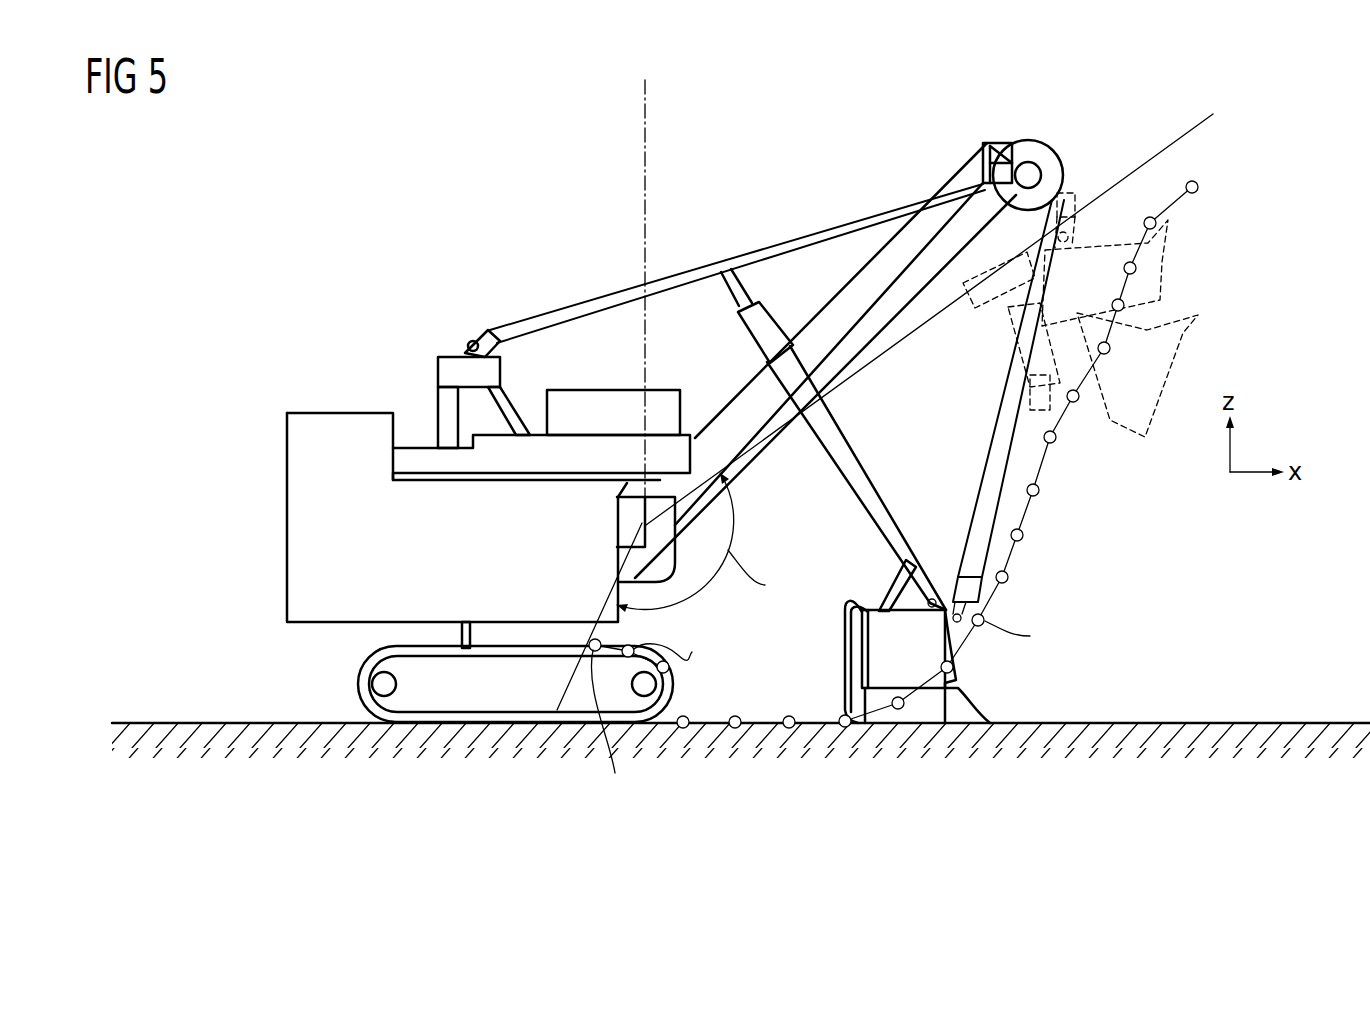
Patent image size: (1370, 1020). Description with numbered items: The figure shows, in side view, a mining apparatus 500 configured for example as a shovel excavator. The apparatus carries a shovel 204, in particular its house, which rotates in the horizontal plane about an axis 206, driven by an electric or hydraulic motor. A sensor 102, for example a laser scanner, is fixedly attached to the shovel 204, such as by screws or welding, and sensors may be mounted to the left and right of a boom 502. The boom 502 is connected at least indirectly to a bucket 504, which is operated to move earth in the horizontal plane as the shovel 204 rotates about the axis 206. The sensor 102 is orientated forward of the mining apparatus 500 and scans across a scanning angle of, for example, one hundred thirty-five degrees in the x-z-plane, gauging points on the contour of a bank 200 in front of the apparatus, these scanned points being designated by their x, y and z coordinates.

The mining apparatus 500 is at (452, 258).
The boom 502 is at (887, 307).
The bucket 504 is at (920, 707).
The shovel 204 is at (733, 468).
The axis 206 is at (653, 118).
The sensor 102 is at (625, 518).
The bank 200 is at (1017, 550).